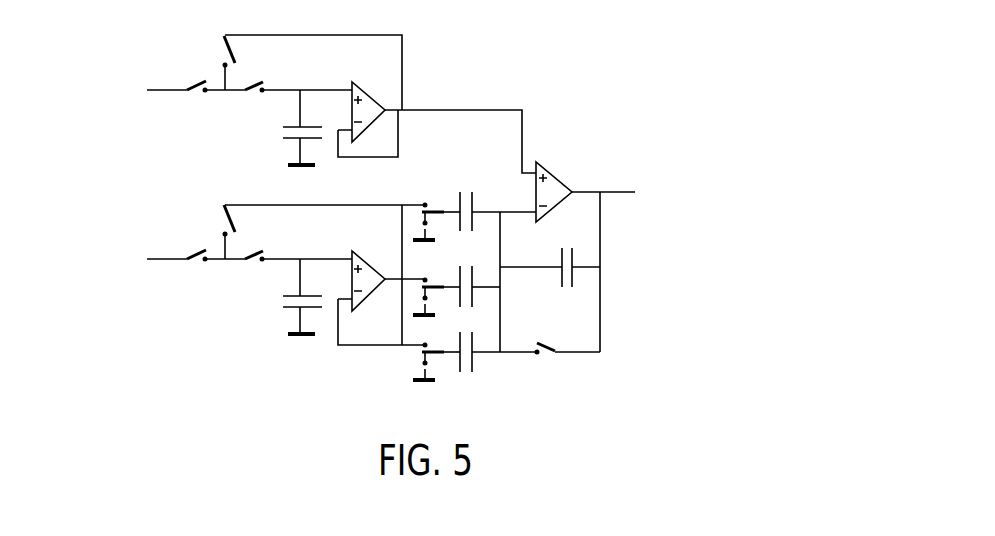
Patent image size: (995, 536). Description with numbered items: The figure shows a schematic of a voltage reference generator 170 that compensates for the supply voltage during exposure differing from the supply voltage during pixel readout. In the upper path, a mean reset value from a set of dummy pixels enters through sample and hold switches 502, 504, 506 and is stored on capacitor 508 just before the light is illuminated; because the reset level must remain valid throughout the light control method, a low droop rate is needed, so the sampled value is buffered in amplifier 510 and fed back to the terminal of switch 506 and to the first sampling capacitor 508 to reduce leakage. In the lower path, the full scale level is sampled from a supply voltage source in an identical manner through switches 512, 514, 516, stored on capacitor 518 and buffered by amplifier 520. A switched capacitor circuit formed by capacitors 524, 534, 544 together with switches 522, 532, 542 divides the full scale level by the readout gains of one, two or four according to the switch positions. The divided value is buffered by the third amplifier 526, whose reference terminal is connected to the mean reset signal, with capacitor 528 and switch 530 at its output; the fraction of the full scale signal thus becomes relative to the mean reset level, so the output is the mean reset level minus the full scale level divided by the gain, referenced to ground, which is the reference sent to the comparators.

The voltage reference generator 170 is at (687, 87).
The sample and hold switch 502 is at (200, 107).
The sample and hold switch 504 is at (231, 53).
The sample and hold switch 506 is at (248, 107).
The capacitor 508 is at (285, 139).
The amplifier 510 is at (370, 92).
The sample and hold switch 512 is at (204, 290).
The sample and hold switch 514 is at (250, 232).
The sample and hold switch 516 is at (246, 291).
The capacitor 518 is at (291, 310).
The amplifier 520 is at (372, 261).
The switch 522 is at (428, 200).
The capacitor 524 is at (478, 200).
The amplifier 526 is at (555, 177).
The capacitor 528 is at (572, 253).
The switch 530 is at (547, 345).
The switch 532 is at (420, 288).
The capacitor 534 is at (475, 288).
The switch 542 is at (420, 353).
The capacitor 544 is at (472, 360).